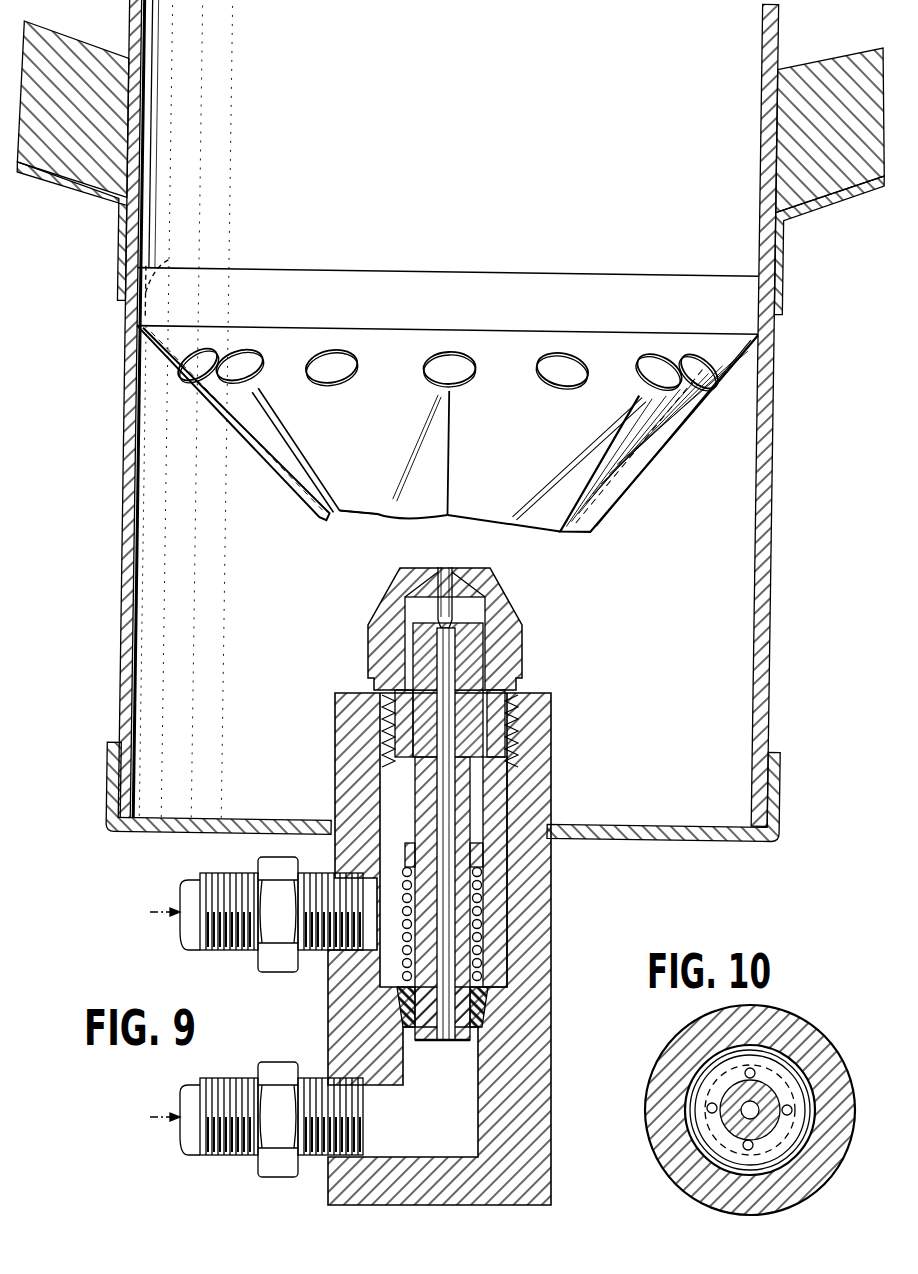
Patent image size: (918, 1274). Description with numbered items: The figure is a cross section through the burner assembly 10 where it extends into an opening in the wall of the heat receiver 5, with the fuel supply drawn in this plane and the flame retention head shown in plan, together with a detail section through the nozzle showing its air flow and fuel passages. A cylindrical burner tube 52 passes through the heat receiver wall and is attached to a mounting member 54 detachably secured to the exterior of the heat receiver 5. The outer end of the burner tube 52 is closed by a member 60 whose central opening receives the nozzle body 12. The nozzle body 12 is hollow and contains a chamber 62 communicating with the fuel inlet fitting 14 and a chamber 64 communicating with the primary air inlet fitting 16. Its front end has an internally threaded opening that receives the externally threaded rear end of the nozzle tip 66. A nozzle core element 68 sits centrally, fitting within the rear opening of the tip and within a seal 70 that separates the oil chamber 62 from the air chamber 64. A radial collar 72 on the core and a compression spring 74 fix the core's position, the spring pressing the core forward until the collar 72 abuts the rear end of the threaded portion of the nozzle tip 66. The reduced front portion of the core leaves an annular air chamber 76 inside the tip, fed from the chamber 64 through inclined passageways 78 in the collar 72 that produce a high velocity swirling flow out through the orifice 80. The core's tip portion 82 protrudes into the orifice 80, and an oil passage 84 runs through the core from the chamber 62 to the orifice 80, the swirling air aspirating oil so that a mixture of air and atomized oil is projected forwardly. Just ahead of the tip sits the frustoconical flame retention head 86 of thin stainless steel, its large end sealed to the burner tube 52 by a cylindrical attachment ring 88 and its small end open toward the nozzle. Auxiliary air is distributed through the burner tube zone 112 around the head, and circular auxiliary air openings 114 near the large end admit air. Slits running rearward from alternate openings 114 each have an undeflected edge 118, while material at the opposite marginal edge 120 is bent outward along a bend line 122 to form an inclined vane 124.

In FIG. 9, the heat receiver 5 is at (93, 38).
In FIG. 9, the burner assembly 10 is at (284, 780).
In FIG. 9, the nozzle body 12 is at (552, 975).
In FIG. 10, the nozzle body 12 is at (851, 1150).
In FIG. 9, the fuel inlet fitting 14 is at (263, 1166).
In FIG. 9, the primary air inlet fitting 16 is at (263, 960).
In FIG. 9, the burner tube 52 is at (122, 640).
In FIG. 9, the mounting member 54 is at (116, 256).
In FIG. 9, the closure member 60 is at (674, 838).
In FIG. 9, the oil chamber 62 is at (478, 1121).
In FIG. 9, the air chamber 64 is at (481, 893).
In FIG. 9, the nozzle tip 66 is at (523, 651).
In FIG. 9, the nozzle core element 68 is at (462, 1042).
In FIG. 9, the seal 70 is at (488, 1010).
In FIG. 9, the radial collar 72 is at (484, 786).
In FIG. 10, the radial collar 72 is at (793, 1152).
In FIG. 9, the compression spring 74 is at (478, 917).
In FIG. 9, the air chamber 76 is at (480, 612).
In FIG. 10, the inclined passageways 78 is at (690, 1080).
In FIG. 9, the orifice 80 is at (440, 566).
In FIG. 9, the tip portion 82 is at (453, 570).
In FIG. 9, the oil passage 84 is at (437, 816).
In FIG. 10, the oil passage 84 is at (758, 1106).
In FIG. 9, the flame retention head 86 is at (377, 516).
In FIG. 9, the attachment ring 88 is at (166, 263).
In FIG. 9, the burner tube zone 112 is at (218, 583).
In FIG. 9, the auxiliary air openings 114 is at (433, 365).
In FIG. 9, the slit edge 118 is at (434, 514).
In FIG. 9, the marginal edge 120 is at (328, 523).
In FIG. 9, the bend line 122 is at (410, 470).
In FIG. 9, the inclined vane 124 is at (427, 450).